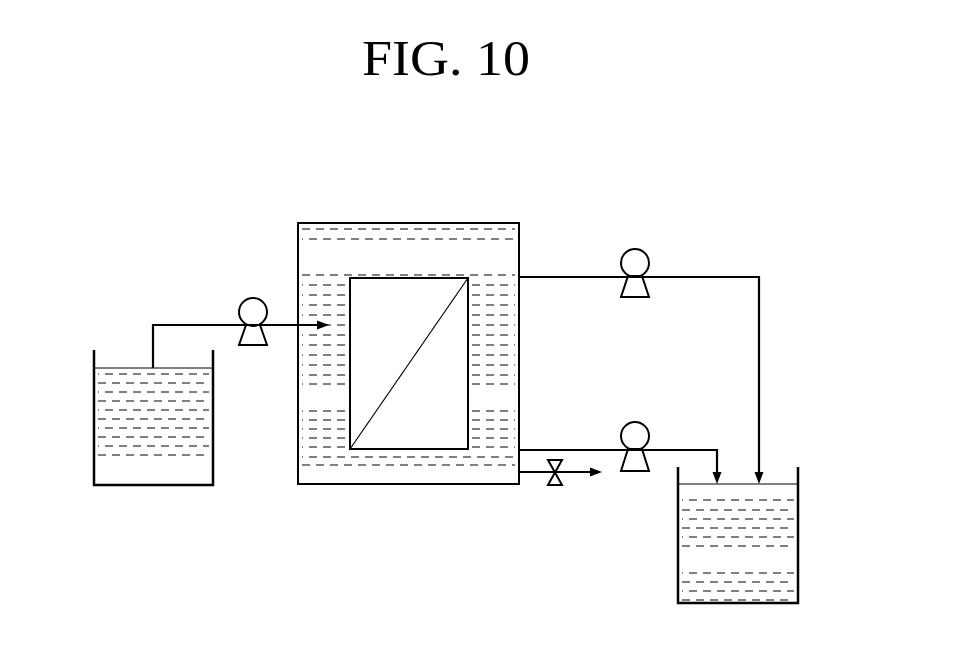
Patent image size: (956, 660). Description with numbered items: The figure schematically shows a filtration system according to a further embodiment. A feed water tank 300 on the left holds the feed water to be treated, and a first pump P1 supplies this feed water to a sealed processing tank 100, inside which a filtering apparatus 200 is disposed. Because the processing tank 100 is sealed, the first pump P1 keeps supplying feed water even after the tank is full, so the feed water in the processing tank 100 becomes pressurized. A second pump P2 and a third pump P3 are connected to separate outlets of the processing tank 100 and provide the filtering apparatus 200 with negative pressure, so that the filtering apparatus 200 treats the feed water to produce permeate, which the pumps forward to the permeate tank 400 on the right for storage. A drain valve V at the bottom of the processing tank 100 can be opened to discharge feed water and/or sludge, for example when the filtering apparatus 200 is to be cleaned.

The processing tank 100 is at (452, 223).
The filtering apparatus 200 is at (395, 277).
The feed water tank 300 is at (94, 428).
The permeate tank 400 is at (798, 537).
The first pump P1 is at (240, 302).
The second pump P2 is at (648, 258).
The third pump P3 is at (648, 430).
The drain valve V is at (553, 486).